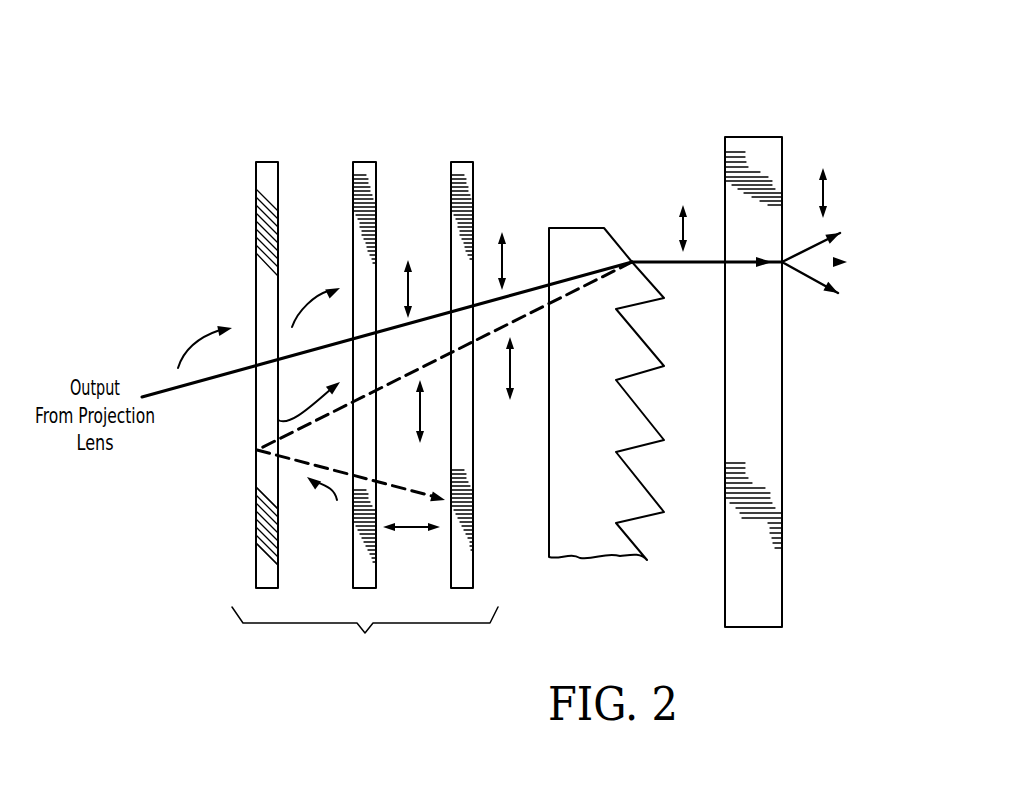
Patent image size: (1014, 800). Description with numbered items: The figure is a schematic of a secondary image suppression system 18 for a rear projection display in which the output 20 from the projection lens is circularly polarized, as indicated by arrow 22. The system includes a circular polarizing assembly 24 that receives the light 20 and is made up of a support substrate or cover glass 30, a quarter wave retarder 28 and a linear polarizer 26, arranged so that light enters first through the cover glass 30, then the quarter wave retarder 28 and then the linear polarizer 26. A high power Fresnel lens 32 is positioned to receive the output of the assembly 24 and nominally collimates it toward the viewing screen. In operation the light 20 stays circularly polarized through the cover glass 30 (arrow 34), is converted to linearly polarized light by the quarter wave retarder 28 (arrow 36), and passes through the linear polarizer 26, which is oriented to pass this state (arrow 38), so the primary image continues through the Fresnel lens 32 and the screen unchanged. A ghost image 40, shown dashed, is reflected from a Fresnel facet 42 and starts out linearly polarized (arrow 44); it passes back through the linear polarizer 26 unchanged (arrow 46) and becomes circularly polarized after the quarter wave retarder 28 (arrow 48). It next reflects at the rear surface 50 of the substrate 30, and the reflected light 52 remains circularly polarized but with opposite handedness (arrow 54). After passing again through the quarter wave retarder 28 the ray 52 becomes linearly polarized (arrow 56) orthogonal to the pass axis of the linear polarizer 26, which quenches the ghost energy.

The secondary image suppression system 18 is at (210, 169).
The output from projection lens 20 is at (145, 396).
The arrow indicating circular polarization 22 is at (180, 348).
The circular polarizing assembly 24 is at (365, 635).
The linear polarizer 26 is at (459, 170).
The quarter wave retarder 28 is at (364, 170).
The support substrate 30 is at (266, 170).
The Fresnel lens 32 is at (576, 216).
The arrow indicating polarization after cover glass 34 is at (310, 300).
The arrow indicating polarization after quarter wave retarder 36 is at (410, 290).
The arrow indicating polarization after linear polarizer 38 is at (504, 264).
The ghost image 40 is at (575, 290).
The Fresnel facet 42 is at (632, 262).
The arrow indicating linear polarization of reflected ghost light 44 is at (511, 368).
The arrow indicating polarization maintained through linear polarizer 46 is at (420, 420).
The arrow indicating circular polarization after quarter wave retarder 48 is at (257, 417).
The rear surface of support substrate 50 is at (257, 566).
The reflected light 52 is at (297, 465).
The arrow indicating opposite-handed circular polarization 54 is at (337, 500).
The arrow indicating linear polarization of re-reflected ghost ray 56 is at (415, 528).